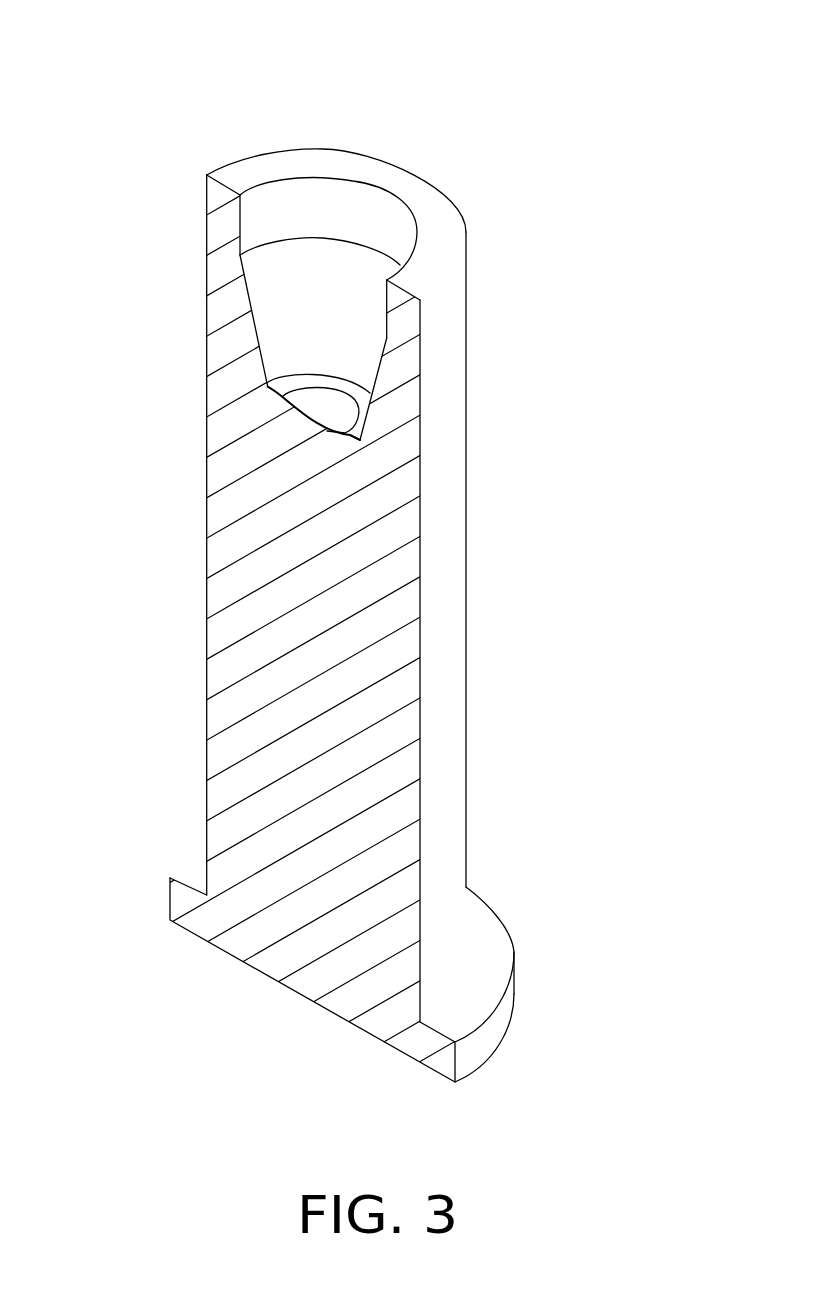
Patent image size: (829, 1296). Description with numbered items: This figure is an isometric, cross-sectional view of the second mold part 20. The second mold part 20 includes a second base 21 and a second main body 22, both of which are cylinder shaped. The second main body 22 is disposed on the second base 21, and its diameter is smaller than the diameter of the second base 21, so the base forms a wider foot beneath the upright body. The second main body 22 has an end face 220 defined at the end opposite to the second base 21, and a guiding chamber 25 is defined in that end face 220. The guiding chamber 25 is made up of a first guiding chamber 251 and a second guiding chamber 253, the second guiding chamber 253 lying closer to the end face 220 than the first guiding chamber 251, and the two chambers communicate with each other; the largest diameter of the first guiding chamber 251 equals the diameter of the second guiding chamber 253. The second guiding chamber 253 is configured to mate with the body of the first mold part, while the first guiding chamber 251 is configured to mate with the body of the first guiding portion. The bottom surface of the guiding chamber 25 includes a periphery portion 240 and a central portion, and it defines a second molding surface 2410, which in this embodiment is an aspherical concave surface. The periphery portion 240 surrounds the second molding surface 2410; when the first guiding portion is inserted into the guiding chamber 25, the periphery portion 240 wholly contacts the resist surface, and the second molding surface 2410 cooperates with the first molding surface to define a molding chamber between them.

The second mold part 20 is at (408, 82).
The second base 21 is at (194, 877).
The second main body 22 is at (263, 651).
The end face 220 is at (252, 172).
The guiding chamber 25 is at (411, 273).
The second guiding chamber 253 is at (352, 217).
The first guiding chamber 251 is at (358, 277).
The periphery portion 240 is at (346, 388).
The second molding surface 2410 is at (318, 411).